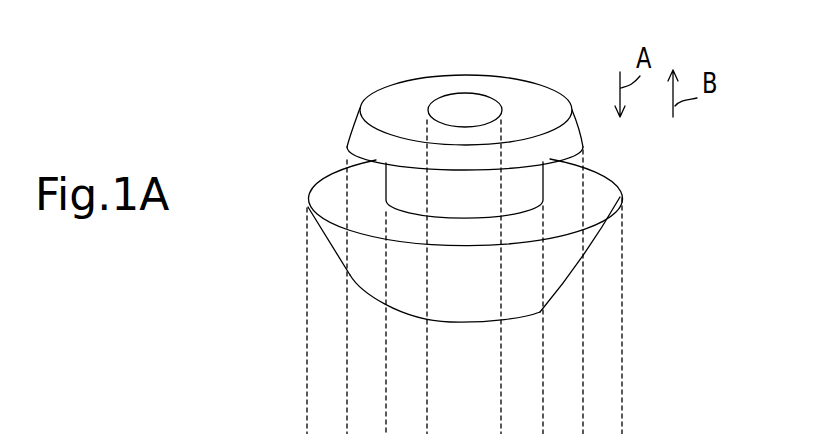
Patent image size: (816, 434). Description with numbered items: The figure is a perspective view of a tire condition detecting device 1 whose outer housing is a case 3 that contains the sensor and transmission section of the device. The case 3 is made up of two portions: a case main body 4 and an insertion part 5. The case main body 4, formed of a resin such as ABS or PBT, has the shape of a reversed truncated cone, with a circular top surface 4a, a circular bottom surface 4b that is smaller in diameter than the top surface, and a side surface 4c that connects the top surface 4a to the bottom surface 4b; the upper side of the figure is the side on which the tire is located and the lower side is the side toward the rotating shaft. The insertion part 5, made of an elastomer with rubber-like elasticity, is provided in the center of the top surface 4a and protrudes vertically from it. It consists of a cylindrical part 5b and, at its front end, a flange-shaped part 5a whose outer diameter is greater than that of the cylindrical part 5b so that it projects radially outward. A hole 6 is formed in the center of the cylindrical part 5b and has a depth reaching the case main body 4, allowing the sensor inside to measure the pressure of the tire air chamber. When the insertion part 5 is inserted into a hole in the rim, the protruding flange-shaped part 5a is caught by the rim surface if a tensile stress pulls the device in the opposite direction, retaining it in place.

The tire condition detecting device 1 is at (386, 87).
The case 3 is at (600, 172).
The case main body 4 is at (335, 250).
The top surface 4a is at (330, 188).
The bottom surface 4b is at (450, 323).
The side surface 4c is at (560, 273).
The insertion part 5 is at (360, 105).
The flange-shaped part 5a is at (582, 145).
The cylindrical part 5b is at (477, 198).
The hole 6 is at (458, 108).